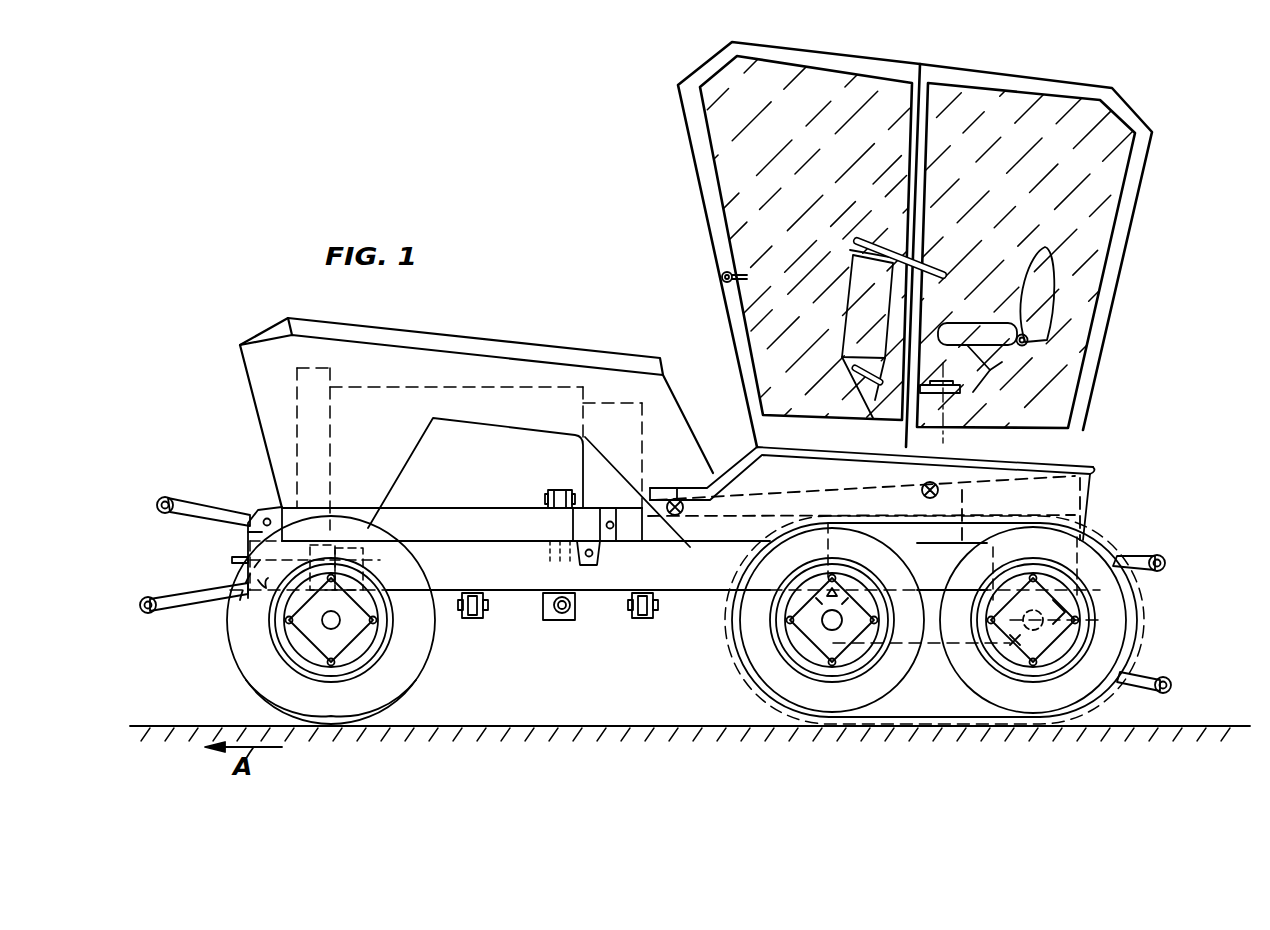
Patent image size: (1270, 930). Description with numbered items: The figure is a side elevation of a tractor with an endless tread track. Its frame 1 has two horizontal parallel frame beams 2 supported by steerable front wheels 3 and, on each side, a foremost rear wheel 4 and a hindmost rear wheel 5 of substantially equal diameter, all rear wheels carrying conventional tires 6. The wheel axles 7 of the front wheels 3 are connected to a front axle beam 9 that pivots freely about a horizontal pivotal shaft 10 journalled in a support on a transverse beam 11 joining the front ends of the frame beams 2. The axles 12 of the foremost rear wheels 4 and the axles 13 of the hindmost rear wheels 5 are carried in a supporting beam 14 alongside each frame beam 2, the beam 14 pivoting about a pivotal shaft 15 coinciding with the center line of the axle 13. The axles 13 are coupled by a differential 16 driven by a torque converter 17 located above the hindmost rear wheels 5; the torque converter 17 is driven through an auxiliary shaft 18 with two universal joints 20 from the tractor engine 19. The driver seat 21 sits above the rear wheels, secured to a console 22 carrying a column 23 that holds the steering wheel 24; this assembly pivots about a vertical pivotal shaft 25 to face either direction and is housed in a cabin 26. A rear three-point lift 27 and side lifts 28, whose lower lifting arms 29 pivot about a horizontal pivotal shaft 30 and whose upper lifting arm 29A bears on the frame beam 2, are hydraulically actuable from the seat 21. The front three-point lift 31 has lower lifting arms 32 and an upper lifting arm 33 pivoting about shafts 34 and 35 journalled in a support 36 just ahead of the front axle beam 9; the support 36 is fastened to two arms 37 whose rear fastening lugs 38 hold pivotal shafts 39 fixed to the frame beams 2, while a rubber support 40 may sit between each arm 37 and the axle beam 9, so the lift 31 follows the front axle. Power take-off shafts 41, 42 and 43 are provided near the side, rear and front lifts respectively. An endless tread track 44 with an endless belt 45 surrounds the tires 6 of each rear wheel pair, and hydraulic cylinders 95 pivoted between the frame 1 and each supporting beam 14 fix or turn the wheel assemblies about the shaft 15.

The frame 1 is at (693, 590).
The frame beams 2 is at (715, 575).
The front wheels 3 is at (253, 677).
The foremost rear wheels 4 is at (742, 678).
The hindmost rear wheels 5 is at (1143, 620).
The tires 6 is at (972, 680).
The wheel axles 7 is at (345, 615).
The front axle beam 9 is at (380, 574).
The pivotal shaft 10 is at (312, 566).
The transverse beam 11 is at (362, 562).
The wheel axles 12 is at (823, 620).
The wheel axles 13 is at (1033, 633).
The supporting beam 14 is at (937, 637).
The pivotal shaft 15 is at (983, 600).
The differential 16 is at (1083, 603).
The torque converter 17 is at (1093, 488).
The auxiliary shaft 18 is at (783, 503).
The tractor engine 19 is at (413, 397).
The universal joints 20 is at (682, 479).
The driver seat 21 is at (980, 330).
The console 22 is at (860, 388).
The column 23 is at (867, 297).
The steering wheel 24 is at (937, 268).
The pivotal shaft 25 is at (970, 378).
The cabin 26 is at (700, 183).
The three-point lift 27 is at (1146, 667).
The lifts 28 is at (547, 622).
The brackets 29 is at (472, 620).
The upper lifting arm 29A is at (556, 488).
The pivotal shaft 30 is at (487, 606).
The front three-point lift 31 is at (147, 538).
The lower lifting arms 32 is at (192, 600).
The upper lifting arm 33 is at (203, 515).
The shaft 34 is at (262, 590).
The shaft 35 is at (266, 516).
The support 36 is at (248, 532).
The arms 37 is at (418, 513).
The fastening lugs 38 is at (577, 553).
The pivotal shafts 39 is at (600, 558).
The rubber support 40 is at (345, 528).
The power take-off shaft 41 is at (562, 614).
The power take-off shaft 42 is at (1085, 630).
The power take-off shaft 43 is at (232, 561).
The endless tread track 44 is at (948, 720).
The endless belt 45 is at (1115, 558).
The hydraulic cylinders 95 is at (810, 556).